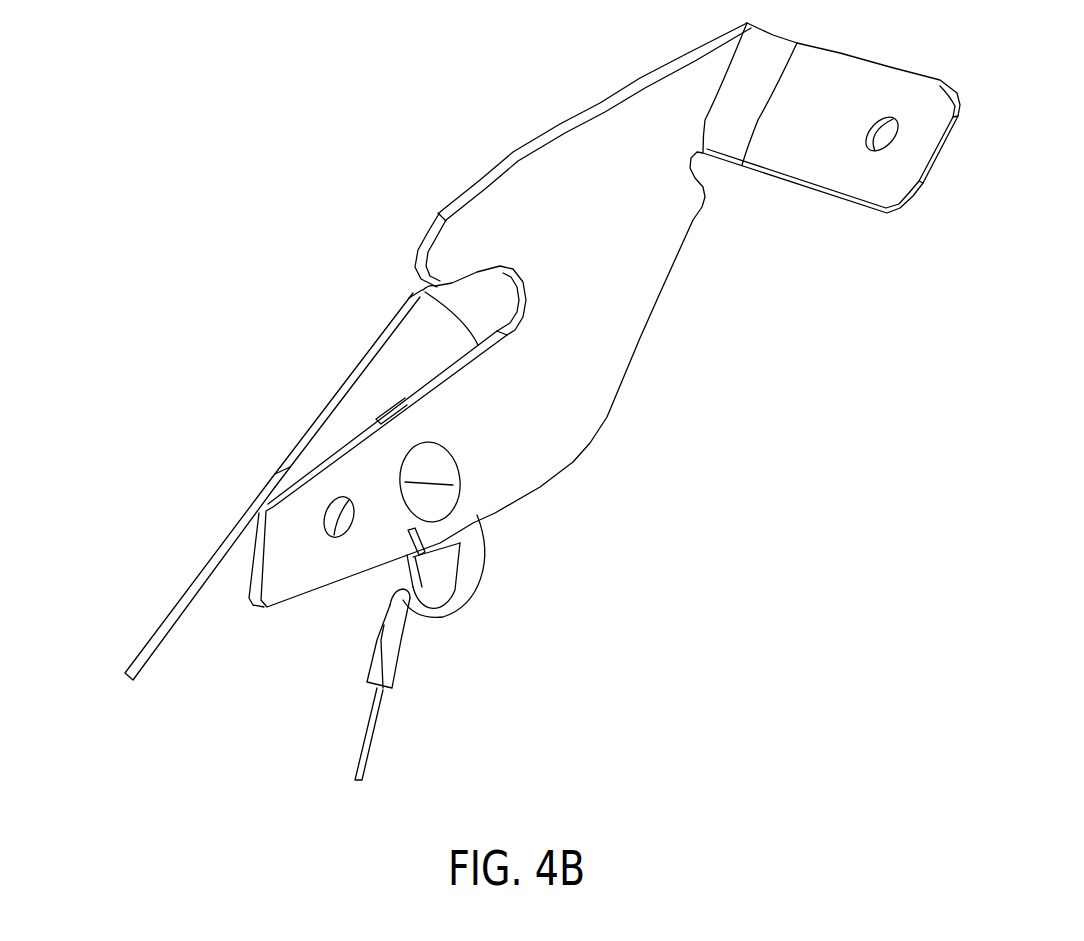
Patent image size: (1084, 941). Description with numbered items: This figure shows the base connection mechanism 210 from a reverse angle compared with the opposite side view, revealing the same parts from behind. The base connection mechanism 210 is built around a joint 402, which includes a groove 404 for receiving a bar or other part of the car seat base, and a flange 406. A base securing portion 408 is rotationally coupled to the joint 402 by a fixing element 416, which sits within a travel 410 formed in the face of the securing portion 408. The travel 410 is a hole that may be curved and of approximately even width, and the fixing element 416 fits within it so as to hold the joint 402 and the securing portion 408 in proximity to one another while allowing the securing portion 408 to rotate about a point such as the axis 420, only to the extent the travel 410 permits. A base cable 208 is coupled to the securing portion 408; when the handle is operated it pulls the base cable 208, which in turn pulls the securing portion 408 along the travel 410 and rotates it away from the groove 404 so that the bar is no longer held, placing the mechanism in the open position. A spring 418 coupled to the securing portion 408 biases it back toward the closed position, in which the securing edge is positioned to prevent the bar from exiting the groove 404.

The base cable 208 is at (395, 632).
The base connection mechanism 210 is at (122, 467).
The joint 402 is at (629, 258).
The groove 404 is at (522, 318).
The flange 406 is at (840, 123).
The base securing portion 408 is at (400, 343).
The travel 410 is at (446, 302).
The fixing element 416 is at (430, 462).
The spring 418 is at (205, 573).
The axis 420 is at (333, 537).